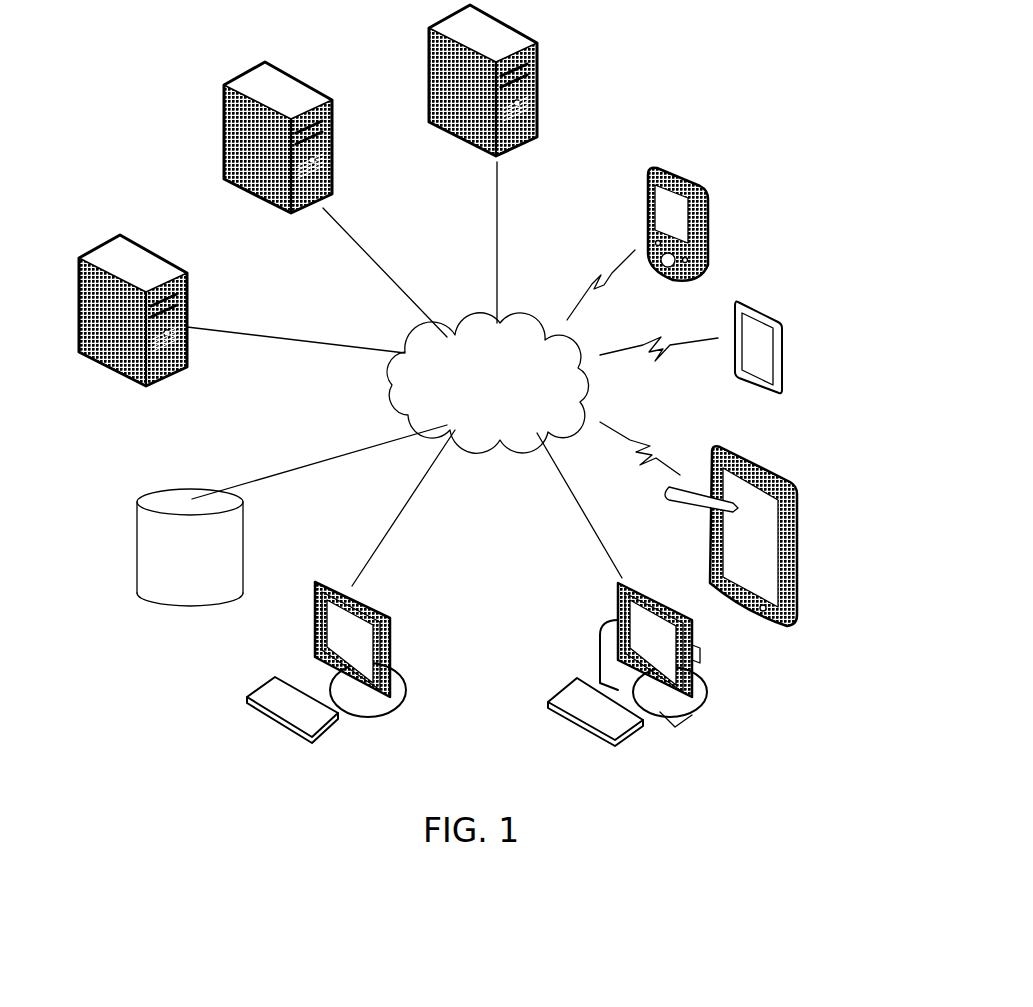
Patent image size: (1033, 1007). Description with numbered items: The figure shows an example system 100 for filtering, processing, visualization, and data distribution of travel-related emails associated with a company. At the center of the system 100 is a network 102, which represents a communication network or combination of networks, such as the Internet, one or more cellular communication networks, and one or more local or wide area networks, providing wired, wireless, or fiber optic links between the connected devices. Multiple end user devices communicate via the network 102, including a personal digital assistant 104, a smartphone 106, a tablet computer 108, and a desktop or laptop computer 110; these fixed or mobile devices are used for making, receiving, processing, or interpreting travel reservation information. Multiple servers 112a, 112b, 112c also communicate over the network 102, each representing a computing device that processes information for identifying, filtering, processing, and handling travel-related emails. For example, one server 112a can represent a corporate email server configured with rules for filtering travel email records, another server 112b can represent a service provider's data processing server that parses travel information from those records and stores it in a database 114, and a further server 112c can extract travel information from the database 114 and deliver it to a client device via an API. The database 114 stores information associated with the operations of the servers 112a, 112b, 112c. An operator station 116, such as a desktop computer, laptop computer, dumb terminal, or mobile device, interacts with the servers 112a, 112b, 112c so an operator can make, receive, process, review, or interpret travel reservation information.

The system 100 is at (782, 34).
The network 102 is at (487, 466).
The personal digital assistant 104 is at (670, 163).
The smartphone 106 is at (767, 305).
The tablet computer 108 is at (762, 458).
The desktop or laptop computer 110 is at (710, 680).
The server 112a is at (125, 380).
The server 112b is at (273, 203).
The server 112c is at (476, 152).
The database 114 is at (160, 597).
The operator station 116 is at (375, 593).